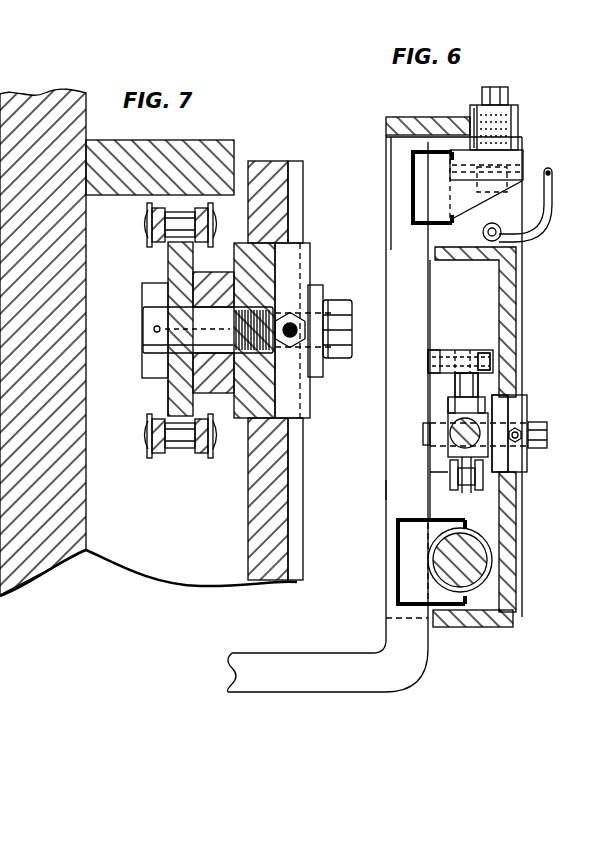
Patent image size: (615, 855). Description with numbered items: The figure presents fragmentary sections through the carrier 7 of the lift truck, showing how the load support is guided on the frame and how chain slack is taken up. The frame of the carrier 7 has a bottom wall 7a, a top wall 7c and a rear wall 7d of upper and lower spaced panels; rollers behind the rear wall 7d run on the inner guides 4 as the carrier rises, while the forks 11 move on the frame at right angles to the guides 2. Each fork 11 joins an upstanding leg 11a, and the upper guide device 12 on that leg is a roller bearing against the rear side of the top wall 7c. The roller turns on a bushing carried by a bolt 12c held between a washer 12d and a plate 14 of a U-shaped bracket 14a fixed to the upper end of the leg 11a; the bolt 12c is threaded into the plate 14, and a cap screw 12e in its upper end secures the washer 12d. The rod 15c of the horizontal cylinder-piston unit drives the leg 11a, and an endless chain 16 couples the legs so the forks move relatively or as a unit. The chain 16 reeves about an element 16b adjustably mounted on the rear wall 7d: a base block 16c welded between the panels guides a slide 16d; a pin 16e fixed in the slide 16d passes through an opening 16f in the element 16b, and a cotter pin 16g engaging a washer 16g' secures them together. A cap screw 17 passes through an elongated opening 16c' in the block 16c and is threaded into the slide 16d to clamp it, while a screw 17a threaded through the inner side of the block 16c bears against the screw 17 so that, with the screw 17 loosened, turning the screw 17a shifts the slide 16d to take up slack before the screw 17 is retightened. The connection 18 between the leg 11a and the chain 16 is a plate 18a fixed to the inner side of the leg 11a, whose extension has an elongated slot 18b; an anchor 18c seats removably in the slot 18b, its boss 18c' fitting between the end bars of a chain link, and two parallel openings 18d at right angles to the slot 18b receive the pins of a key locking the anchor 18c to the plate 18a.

In FIG. 7, the guides 2 is at (0, 648).
In FIG. 7, the inner guides 4 is at (6, 691).
In FIG. 6, the carrier 7 is at (380, 413).
In FIG. 6, the bottom wall 7a is at (452, 622).
In FIG. 6, the top wall 7c is at (386, 124).
In FIG. 7, the rear wall 7d is at (280, 492).
In FIG. 6, the rear wall 7d is at (498, 284).
In FIG. 6, the load carrying member 11 is at (330, 670).
In FIG. 7, the upstanding leg 11a is at (53, 556).
In FIG. 6, the upstanding leg 11a is at (397, 492).
In FIG. 6, the upper guide device 12 is at (565, 129).
In FIG. 6, the bolt 12c is at (497, 190).
In FIG. 6, the washer 12d is at (471, 108).
In FIG. 6, the cap screw 12e is at (500, 88).
In FIG. 6, the plate 14 is at (523, 150).
In FIG. 6, the U-shaped bracket 14a is at (423, 208).
In FIG. 6, the rod 15c is at (434, 510).
In FIG. 7, the movable device 16 is at (147, 447).
In FIG. 7, the reeving element 16b is at (180, 457).
In FIG. 7, the base block 16c is at (314, 314).
In FIG. 6, the base block 16c is at (531, 414).
In FIG. 7, the opening 16c' is at (327, 330).
In FIG. 7, the slide 16d is at (272, 242).
In FIG. 6, the slide 16d is at (508, 412).
In FIG. 7, the pin 16e is at (154, 328).
In FIG. 6, the pin 16e is at (527, 472).
In FIG. 7, the opening 16f is at (168, 398).
In FIG. 7, the cotter pin 16g is at (166, 332).
In FIG. 7, the washer 16g' is at (145, 323).
In FIG. 7, the cap screw 17 is at (340, 305).
In FIG. 7, the screw 17a is at (292, 322).
In FIG. 6, the connection 18 is at (481, 346).
In FIG. 7, the plate 18a is at (212, 142).
In FIG. 6, the plate 18a is at (438, 341).
In FIG. 6, the slot 18b is at (482, 350).
In FIG. 6, the anchor 18c is at (454, 352).
In FIG. 6, the boss 18c' is at (439, 410).
In FIG. 6, the openings 18d is at (493, 368).